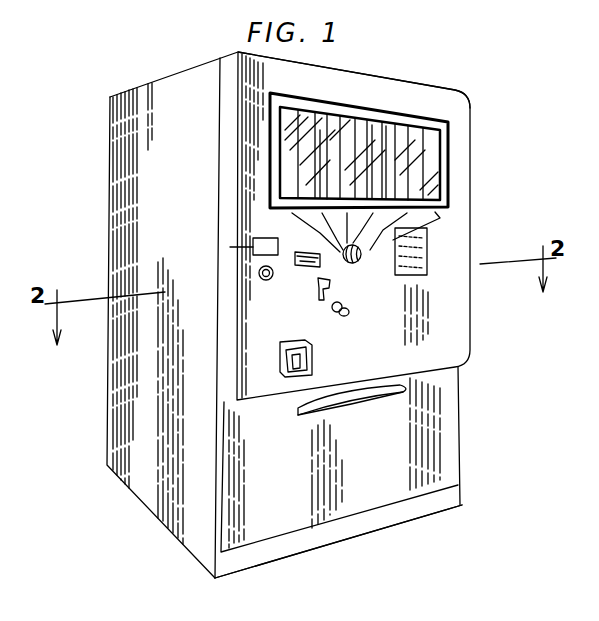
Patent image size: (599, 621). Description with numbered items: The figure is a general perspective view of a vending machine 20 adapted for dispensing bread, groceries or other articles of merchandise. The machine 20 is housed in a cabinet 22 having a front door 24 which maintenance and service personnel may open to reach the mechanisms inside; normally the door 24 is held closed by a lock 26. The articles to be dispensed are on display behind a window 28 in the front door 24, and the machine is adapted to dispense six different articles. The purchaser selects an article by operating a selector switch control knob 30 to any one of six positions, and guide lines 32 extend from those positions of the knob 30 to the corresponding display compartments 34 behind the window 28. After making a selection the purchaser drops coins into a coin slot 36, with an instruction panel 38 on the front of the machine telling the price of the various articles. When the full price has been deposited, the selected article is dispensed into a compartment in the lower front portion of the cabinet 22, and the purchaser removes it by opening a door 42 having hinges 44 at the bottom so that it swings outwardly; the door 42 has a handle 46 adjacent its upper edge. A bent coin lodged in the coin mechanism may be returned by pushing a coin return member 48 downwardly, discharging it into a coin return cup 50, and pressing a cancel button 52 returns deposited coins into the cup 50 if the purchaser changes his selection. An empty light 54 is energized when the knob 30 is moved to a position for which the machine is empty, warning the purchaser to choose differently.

The vending machine 20 is at (512, 97).
The cabinet 22 is at (155, 180).
The front door 24 is at (228, 63).
The lock 26 is at (260, 281).
The window 28 is at (430, 150).
The selector switch control knob 30 is at (350, 264).
The guide lines 32 is at (430, 218).
The display compartments 34 is at (400, 140).
The coin slot 36 is at (300, 267).
The instruction panel 38 is at (428, 252).
The door 42 is at (252, 458).
The hinges 44 is at (225, 555).
The handle 46 is at (362, 415).
The coin return member 48 is at (322, 300).
The coin return cup 50 is at (283, 360).
The cancel button 52 is at (348, 312).
The empty light 54 is at (240, 247).